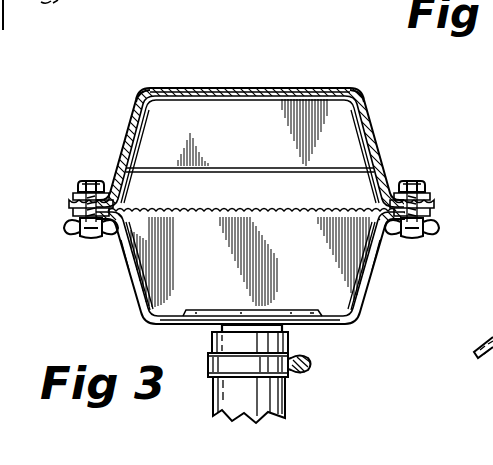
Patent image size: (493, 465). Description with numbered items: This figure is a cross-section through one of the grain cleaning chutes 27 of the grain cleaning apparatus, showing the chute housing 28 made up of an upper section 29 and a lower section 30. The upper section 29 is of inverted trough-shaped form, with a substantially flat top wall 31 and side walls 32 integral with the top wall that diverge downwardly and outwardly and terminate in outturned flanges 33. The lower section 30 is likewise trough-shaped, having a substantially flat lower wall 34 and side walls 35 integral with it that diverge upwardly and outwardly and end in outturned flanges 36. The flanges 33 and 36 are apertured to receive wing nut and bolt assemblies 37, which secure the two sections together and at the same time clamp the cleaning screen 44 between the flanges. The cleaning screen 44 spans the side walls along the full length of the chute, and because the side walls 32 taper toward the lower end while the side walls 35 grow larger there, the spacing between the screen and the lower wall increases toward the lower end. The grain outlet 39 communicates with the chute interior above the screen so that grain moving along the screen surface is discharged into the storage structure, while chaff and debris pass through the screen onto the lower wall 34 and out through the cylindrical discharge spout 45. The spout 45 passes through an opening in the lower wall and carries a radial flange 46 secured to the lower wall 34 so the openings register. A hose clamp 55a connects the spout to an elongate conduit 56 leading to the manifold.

The grain cleaning chute 27 is at (238, 80).
The chute housing 28 is at (283, 86).
The upper section 29 is at (380, 127).
The lower section 30 is at (135, 309).
The top wall 31 is at (193, 67).
The side walls 32 is at (132, 110).
The outturned flanges 33 is at (76, 194).
The lower wall 34 is at (335, 326).
The side walls 35 is at (127, 276).
The outturned flanges 36 is at (67, 217).
The wing nut and bolt assemblies 37 is at (89, 180).
The grain outlet 39 is at (305, 199).
The cleaning screen 44 is at (207, 205).
The cylindrical discharge spout 45 is at (218, 330).
The radial flange 46 is at (200, 310).
The hose clamp 55a is at (312, 364).
The elongate conduit 56 is at (287, 392).